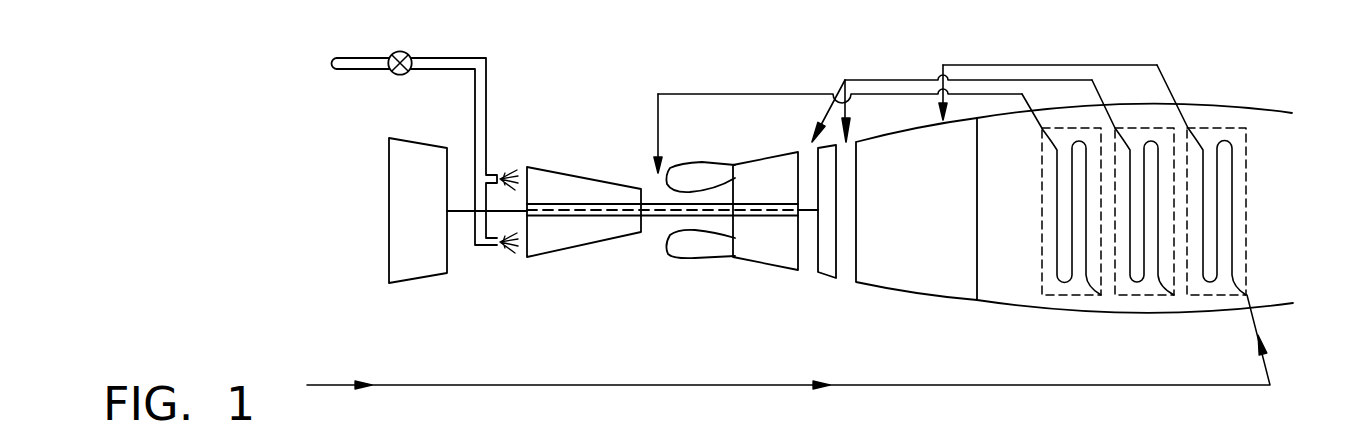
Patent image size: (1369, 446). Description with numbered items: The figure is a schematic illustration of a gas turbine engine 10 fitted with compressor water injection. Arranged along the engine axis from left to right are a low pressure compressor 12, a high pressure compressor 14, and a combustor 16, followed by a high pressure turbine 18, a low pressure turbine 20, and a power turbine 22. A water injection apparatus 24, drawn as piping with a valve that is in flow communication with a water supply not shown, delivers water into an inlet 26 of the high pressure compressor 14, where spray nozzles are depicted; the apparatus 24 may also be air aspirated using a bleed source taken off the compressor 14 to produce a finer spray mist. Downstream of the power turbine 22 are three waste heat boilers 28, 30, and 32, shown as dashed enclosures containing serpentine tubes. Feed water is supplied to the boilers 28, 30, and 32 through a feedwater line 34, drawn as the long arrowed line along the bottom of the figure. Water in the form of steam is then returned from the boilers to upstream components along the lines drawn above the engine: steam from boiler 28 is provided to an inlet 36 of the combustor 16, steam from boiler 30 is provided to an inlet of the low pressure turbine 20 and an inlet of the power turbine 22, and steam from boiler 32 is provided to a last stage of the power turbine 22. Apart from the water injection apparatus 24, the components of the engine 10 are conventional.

The gas turbine engine 10 is at (1273, 88).
The low pressure compressor 12 is at (436, 147).
The high pressure compressor 14 is at (622, 233).
The combustor 16 is at (693, 258).
The high pressure turbine 18 is at (775, 267).
The low pressure turbine 20 is at (823, 275).
The power turbine 22 is at (908, 292).
The water injection apparatus 24 is at (487, 102).
The inlet of high pressure compressor 26 is at (524, 172).
The waste heat boiler 28 is at (1042, 200).
The waste heat boiler 30 is at (1143, 295).
The waste heat boiler 32 is at (1247, 202).
The feedwater line 34 is at (777, 383).
The inlet of combustor 36 is at (666, 185).